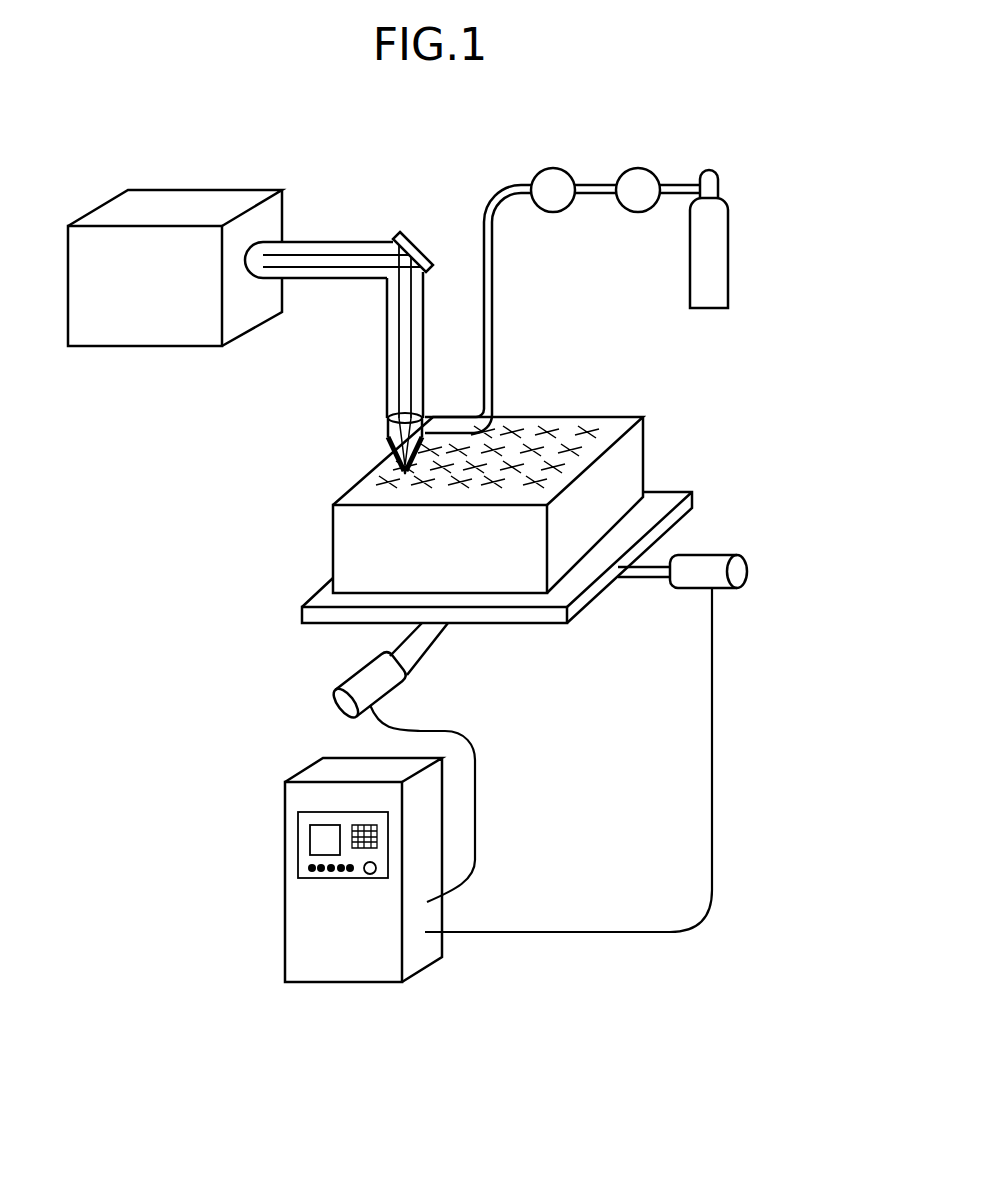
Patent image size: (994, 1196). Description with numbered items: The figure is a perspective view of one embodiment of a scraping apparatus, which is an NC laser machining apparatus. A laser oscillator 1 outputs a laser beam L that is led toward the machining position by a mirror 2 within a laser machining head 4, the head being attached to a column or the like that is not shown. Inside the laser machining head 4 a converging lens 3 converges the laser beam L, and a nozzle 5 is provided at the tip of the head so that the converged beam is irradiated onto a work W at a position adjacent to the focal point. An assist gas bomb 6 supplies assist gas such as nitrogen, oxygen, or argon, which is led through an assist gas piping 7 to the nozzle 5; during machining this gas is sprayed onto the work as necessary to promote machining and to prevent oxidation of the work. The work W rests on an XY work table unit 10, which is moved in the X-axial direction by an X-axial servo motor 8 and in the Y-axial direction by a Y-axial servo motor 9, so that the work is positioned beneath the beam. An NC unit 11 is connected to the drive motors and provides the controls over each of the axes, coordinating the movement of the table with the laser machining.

The laser oscillator 1 is at (187, 200).
The laser beam L is at (302, 255).
The mirror 2 is at (431, 253).
The converging lens 3 is at (390, 418).
The laser machining head 4 is at (424, 330).
The nozzle 5 is at (390, 440).
The assist gas bomb 6 is at (728, 262).
The assist gas piping 7 is at (488, 298).
The X-axial servo motor 8 is at (394, 673).
The Y-axial servo motor 9 is at (722, 556).
The XY work table unit 10 is at (583, 598).
The NC unit 11 is at (328, 770).
The work W is at (613, 420).